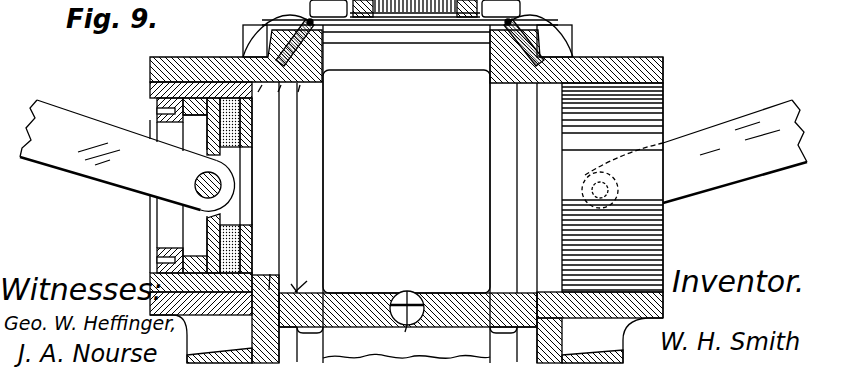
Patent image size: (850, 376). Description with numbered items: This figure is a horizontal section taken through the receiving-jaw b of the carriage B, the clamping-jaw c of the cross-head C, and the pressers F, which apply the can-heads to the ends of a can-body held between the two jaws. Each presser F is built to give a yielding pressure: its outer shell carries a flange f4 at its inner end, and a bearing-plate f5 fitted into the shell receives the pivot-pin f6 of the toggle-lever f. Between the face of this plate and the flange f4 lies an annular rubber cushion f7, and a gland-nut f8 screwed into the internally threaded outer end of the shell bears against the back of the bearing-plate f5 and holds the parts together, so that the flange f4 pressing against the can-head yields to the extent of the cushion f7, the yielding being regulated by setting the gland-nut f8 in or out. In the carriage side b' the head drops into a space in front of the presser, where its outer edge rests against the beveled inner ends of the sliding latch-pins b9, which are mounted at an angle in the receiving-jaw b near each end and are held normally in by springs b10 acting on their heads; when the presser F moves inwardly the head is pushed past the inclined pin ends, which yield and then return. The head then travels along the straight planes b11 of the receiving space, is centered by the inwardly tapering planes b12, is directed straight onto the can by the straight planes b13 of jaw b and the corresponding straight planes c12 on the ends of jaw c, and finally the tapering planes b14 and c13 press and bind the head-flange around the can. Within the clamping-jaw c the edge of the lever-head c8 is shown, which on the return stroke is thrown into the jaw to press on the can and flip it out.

The carriage B is at (406, 194).
The receiving-jaw b is at (410, 65).
The carriage side b' is at (402, 64).
The sliding latch-pins b9 is at (322, 56).
The springs b10 is at (253, 42).
The straight planes b11 is at (259, 96).
The tapering planes b12 is at (274, 276).
The straight planes b13 is at (282, 96).
The second tapering plane b14 is at (304, 96).
The cross-head C is at (408, 299).
The clamping-jaw c is at (322, 292).
The lever-head c8 is at (410, 348).
The straight planes c12 is at (289, 286).
The tapering plane c13 is at (308, 280).
The presser F is at (652, 128).
The toggle-lever f is at (413, 155).
The flange f4 is at (243, 131).
The bearing-plate f5 is at (217, 137).
The pivot-pin f6 is at (196, 189).
The rubber cushion f7 is at (244, 147).
The gland-nut f8 is at (160, 257).